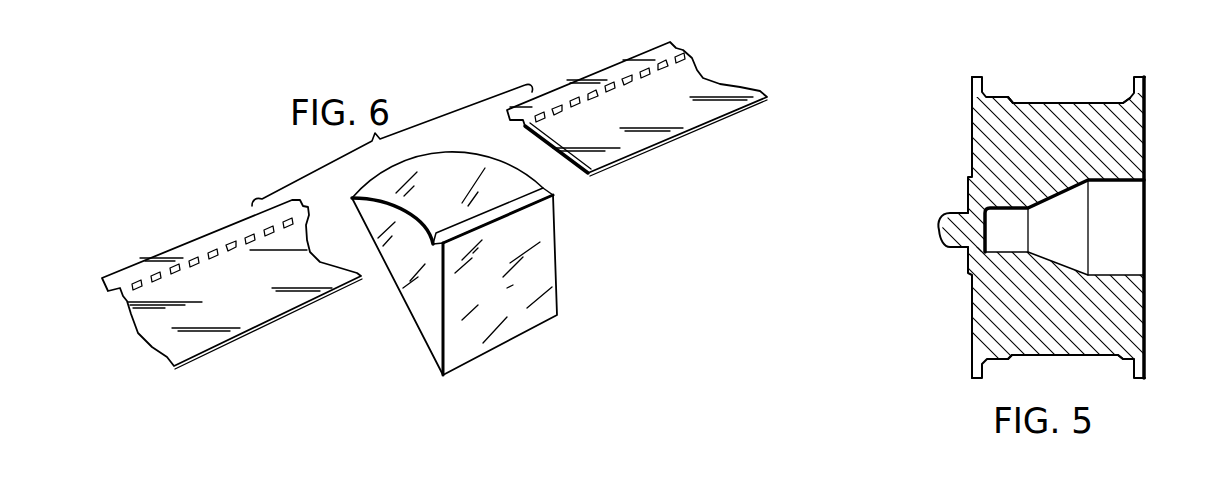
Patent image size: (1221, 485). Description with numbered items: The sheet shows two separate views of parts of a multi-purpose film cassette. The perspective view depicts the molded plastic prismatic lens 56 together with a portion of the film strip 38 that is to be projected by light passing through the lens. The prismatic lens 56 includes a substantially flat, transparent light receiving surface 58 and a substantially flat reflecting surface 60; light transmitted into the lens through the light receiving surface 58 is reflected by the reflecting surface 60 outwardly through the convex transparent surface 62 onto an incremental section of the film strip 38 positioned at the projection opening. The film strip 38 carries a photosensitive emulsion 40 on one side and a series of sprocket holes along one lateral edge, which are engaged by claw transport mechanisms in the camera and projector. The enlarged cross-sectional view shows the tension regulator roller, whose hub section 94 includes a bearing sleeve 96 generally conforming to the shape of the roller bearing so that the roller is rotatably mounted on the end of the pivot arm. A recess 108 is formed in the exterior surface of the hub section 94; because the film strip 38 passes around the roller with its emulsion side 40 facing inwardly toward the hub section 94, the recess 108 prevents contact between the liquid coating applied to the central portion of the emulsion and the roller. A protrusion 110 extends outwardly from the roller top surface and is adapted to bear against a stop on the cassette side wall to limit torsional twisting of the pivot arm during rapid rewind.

In FIG. 6, the film strip 38 is at (637, 109).
In FIG. 6, the photosensitive emulsion 40 is at (571, 172).
In FIG. 6, the prismatic lens 56 is at (508, 251).
In FIG. 6, the light receiving surface 58 is at (501, 337).
In FIG. 6, the reflecting surface 60 is at (396, 283).
In FIG. 6, the convex transparent surface 62 is at (445, 178).
In FIG. 5, the hub section 94 is at (986, 140).
In FIG. 5, the bearing sleeve 96 is at (1110, 231).
In FIG. 5, the recess 108 is at (1048, 103).
In FIG. 5, the protrusion 110 is at (950, 230).